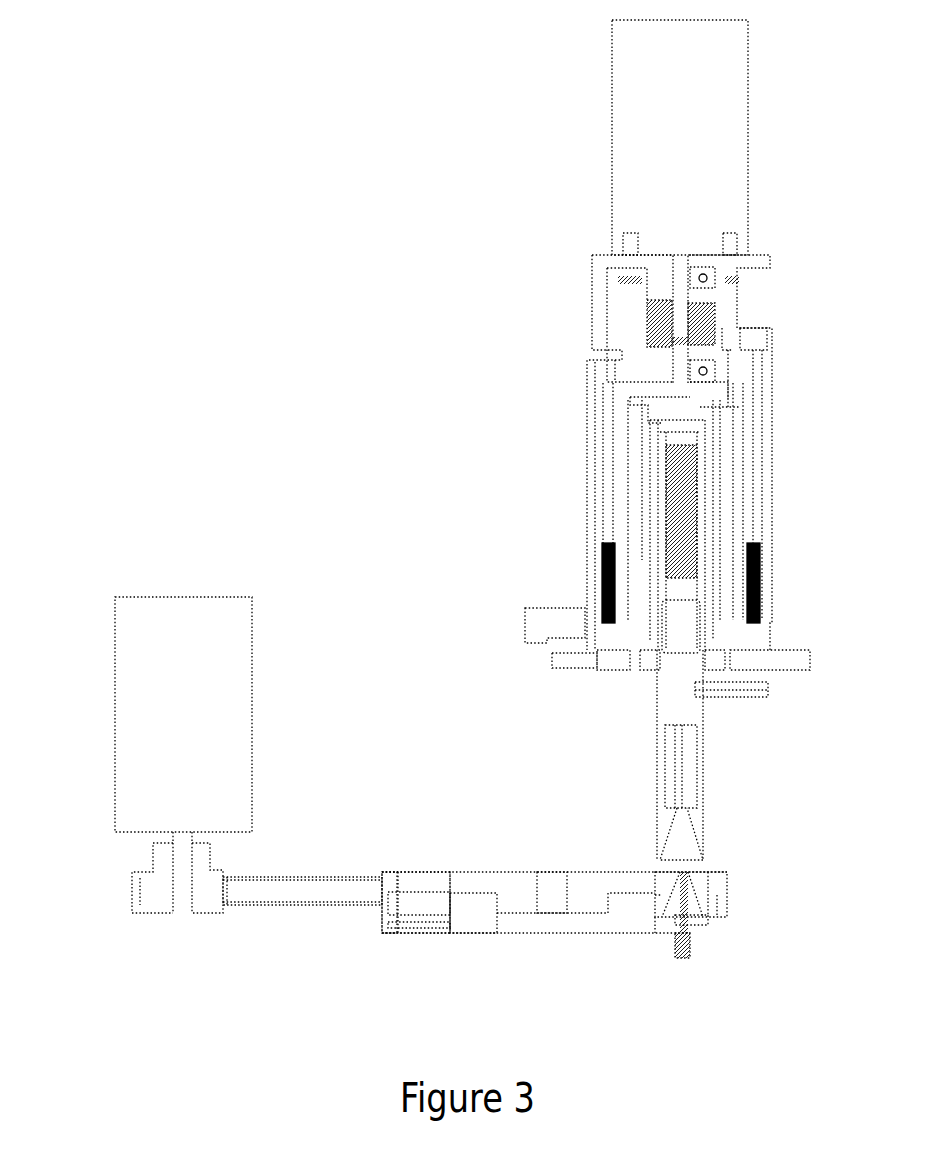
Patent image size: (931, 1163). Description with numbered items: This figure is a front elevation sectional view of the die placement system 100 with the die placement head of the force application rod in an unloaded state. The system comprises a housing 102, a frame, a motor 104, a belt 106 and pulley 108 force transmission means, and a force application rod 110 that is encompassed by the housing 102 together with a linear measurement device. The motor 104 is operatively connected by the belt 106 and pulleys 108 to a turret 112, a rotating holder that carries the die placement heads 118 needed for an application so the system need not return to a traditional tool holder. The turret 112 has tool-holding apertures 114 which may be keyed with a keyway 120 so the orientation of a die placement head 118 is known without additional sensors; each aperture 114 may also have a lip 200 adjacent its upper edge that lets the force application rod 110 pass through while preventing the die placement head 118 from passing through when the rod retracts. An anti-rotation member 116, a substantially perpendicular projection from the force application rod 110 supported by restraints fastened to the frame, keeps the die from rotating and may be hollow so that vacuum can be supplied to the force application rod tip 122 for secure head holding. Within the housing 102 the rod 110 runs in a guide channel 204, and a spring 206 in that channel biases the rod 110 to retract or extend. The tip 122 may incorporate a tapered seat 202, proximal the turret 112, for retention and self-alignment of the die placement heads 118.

The die placement system 100 is at (164, 244).
The housing 102 is at (748, 70).
The motor 104 is at (116, 597).
The belt 106 is at (305, 878).
The pulley 108 is at (155, 915).
The force application rod 110 is at (705, 757).
The turret 112 is at (388, 872).
The tool-holding aperture 114 is at (450, 872).
The anti-rotation member 116 is at (766, 689).
The die placement head 118 is at (697, 930).
The keyway 120 is at (705, 857).
The force application rod tip 122 is at (657, 860).
The lip 200 is at (450, 933).
The tapered seat 202 is at (690, 825).
The guide channel 204 is at (658, 520).
The spring 206 is at (667, 482).